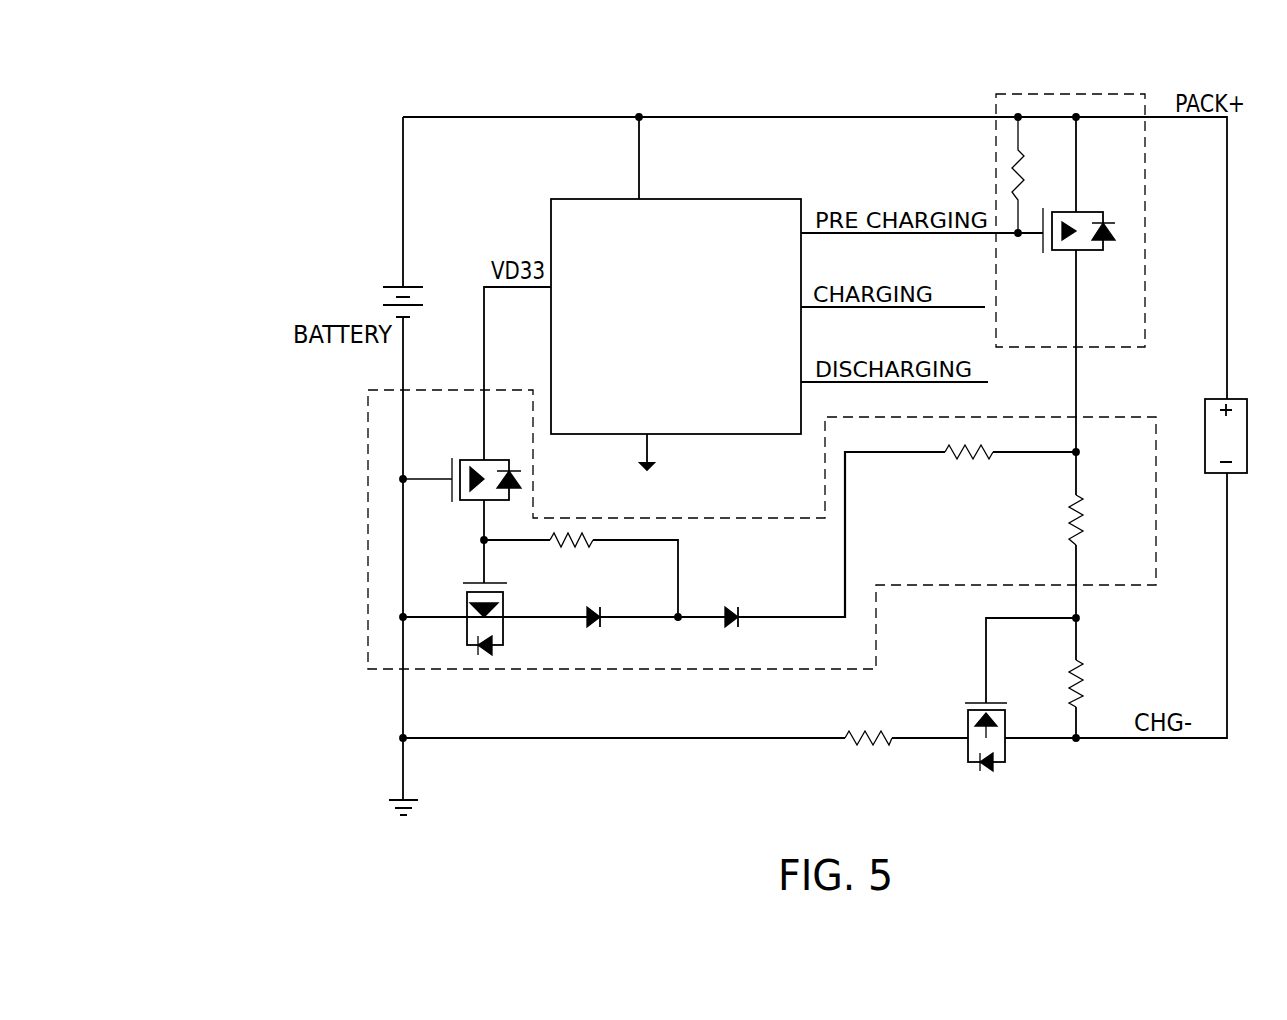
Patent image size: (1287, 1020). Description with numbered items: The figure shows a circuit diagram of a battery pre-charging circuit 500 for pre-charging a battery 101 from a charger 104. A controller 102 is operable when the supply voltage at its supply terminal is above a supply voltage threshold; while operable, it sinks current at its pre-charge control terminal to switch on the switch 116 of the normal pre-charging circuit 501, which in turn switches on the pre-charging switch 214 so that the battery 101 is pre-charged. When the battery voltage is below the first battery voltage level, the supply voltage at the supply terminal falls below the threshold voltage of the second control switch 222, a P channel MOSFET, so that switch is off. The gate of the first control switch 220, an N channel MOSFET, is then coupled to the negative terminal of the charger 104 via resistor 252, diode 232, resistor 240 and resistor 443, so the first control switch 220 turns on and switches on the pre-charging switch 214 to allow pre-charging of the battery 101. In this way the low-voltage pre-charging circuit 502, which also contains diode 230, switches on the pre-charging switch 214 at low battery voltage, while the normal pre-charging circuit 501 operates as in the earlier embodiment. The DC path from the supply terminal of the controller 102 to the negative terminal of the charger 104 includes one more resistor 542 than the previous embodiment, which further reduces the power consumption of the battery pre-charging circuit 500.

The battery pre-charging circuit 500 is at (293, 108).
The battery 101 is at (411, 287).
The controller 102 is at (722, 199).
The charger 104 is at (1232, 399).
The switch 116 is at (1083, 212).
The normal pre-charging circuit 501 is at (1143, 192).
The low-voltage pre-charging circuit 502 is at (605, 670).
The second control switch 222 is at (478, 460).
The first control switch 220 is at (492, 587).
The resistor 252 is at (582, 545).
The diode 230 is at (592, 607).
The diode 232 is at (729, 610).
The resistor 240 is at (962, 448).
The resistor 542 is at (1083, 502).
The resistor 443 is at (1083, 666).
The pre-charging switch 214 is at (992, 703).